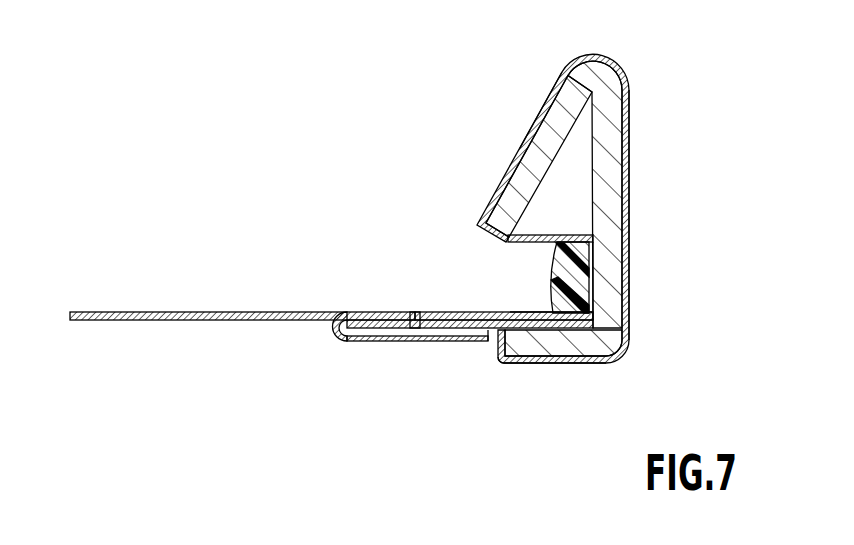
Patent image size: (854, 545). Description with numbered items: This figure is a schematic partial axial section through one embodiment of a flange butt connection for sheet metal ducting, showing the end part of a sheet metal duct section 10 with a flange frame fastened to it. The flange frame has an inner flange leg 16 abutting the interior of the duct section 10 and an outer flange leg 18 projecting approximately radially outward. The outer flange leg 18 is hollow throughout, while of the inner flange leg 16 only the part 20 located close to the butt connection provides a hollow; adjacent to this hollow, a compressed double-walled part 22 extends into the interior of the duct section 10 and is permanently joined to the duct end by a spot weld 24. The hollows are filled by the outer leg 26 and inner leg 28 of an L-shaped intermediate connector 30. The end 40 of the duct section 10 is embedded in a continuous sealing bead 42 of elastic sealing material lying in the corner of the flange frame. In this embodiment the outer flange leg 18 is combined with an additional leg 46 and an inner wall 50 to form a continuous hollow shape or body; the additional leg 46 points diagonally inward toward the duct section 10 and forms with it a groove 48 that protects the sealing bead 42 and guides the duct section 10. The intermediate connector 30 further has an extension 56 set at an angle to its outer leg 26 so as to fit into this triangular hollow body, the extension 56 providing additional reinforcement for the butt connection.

The sheet metal duct section 10 is at (105, 311).
The inner flange leg 16 is at (489, 348).
The outer flange leg 18 is at (630, 147).
The hollow part of inner flange leg 20 is at (567, 363).
The compressed double-walled part 22 is at (346, 312).
The spot weld 24 is at (415, 312).
The outer leg of intermediate connector 26 is at (607, 117).
The inner leg of intermediate connector 28 is at (533, 342).
The intermediate connector 30 is at (641, 198).
The end of duct section 40 is at (585, 304).
The sealing bead 42 is at (595, 252).
The additional leg 46 is at (527, 138).
The groove 48 is at (527, 278).
The inner wall 50 is at (525, 243).
The extension 56 is at (553, 108).